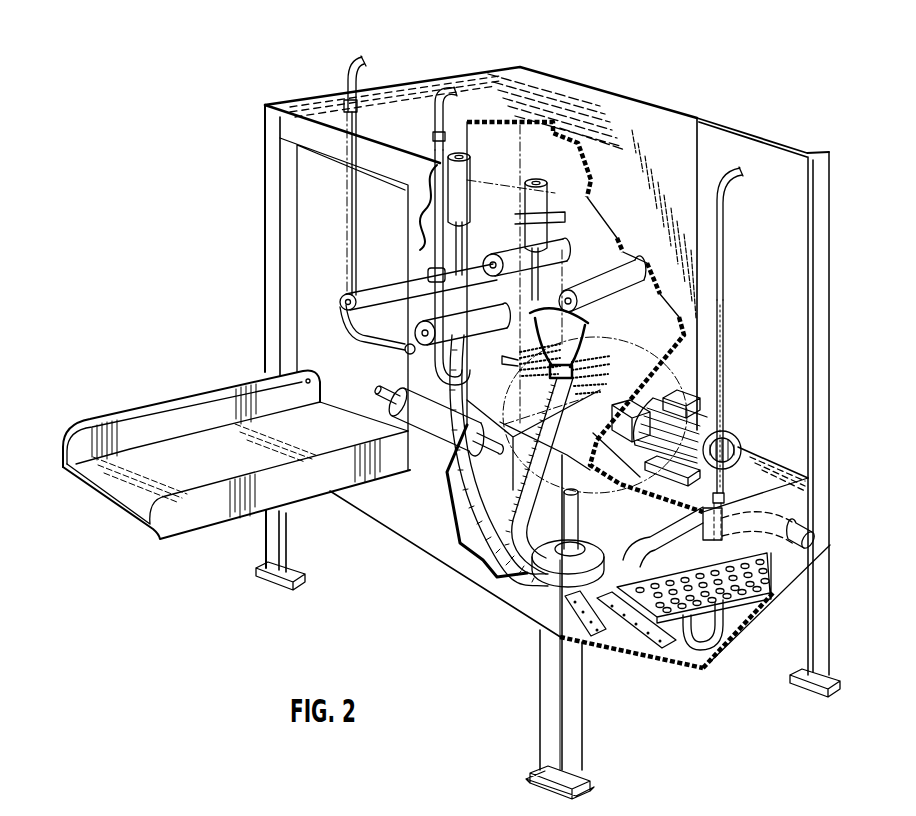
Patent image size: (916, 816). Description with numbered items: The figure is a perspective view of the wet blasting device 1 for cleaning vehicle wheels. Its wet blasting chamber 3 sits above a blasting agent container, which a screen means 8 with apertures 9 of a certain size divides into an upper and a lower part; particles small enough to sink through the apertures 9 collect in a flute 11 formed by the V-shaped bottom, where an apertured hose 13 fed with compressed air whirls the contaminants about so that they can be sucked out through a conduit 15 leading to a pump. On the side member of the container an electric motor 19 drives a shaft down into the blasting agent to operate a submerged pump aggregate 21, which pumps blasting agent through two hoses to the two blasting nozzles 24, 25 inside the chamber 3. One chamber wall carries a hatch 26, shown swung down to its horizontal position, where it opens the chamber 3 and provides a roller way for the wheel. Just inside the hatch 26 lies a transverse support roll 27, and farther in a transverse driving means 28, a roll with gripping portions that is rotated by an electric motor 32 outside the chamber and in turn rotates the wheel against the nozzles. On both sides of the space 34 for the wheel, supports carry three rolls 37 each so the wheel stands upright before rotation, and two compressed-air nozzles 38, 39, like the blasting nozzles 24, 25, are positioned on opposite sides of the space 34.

The wet blasting device 1 is at (630, 95).
The wet blasting chamber 3 is at (530, 146).
The screen means 8 is at (720, 622).
The apertures 9 is at (675, 628).
The flute 11 is at (712, 655).
The apertured hose 13 is at (633, 622).
The conduit 15 is at (818, 527).
The electric motor 19 is at (620, 350).
The pump aggregate 21 is at (547, 583).
The blasting nozzle 24 is at (598, 327).
The blasting nozzle 25 is at (430, 273).
The hatch 26 is at (178, 395).
The transverse support roll 27 is at (445, 425).
The transverse driving means 28 is at (592, 362).
The electric motor 32 is at (740, 446).
The space 34 is at (500, 175).
The rolls 37 is at (348, 294).
The compressed-air nozzle 38 is at (460, 445).
The compressed-air nozzle 39 is at (358, 349).